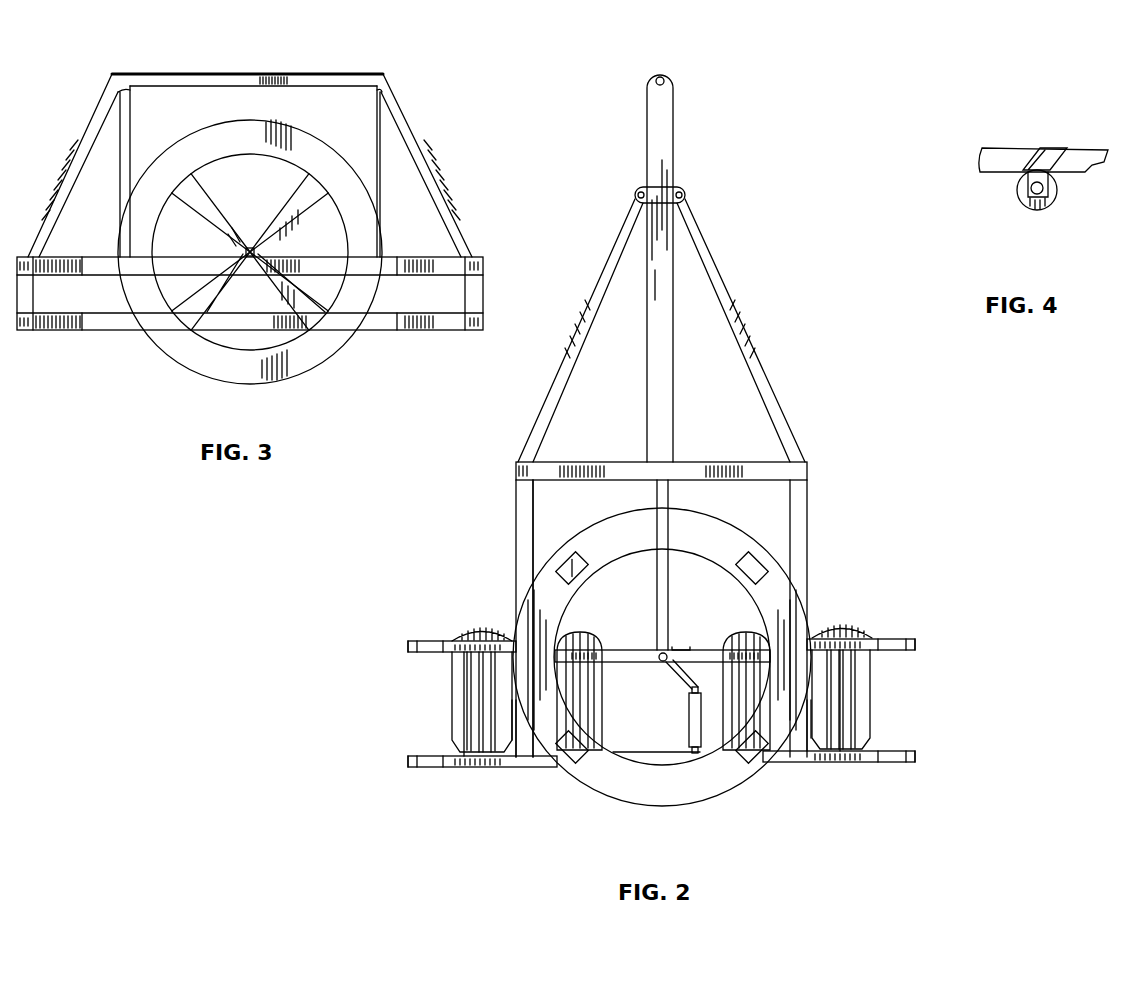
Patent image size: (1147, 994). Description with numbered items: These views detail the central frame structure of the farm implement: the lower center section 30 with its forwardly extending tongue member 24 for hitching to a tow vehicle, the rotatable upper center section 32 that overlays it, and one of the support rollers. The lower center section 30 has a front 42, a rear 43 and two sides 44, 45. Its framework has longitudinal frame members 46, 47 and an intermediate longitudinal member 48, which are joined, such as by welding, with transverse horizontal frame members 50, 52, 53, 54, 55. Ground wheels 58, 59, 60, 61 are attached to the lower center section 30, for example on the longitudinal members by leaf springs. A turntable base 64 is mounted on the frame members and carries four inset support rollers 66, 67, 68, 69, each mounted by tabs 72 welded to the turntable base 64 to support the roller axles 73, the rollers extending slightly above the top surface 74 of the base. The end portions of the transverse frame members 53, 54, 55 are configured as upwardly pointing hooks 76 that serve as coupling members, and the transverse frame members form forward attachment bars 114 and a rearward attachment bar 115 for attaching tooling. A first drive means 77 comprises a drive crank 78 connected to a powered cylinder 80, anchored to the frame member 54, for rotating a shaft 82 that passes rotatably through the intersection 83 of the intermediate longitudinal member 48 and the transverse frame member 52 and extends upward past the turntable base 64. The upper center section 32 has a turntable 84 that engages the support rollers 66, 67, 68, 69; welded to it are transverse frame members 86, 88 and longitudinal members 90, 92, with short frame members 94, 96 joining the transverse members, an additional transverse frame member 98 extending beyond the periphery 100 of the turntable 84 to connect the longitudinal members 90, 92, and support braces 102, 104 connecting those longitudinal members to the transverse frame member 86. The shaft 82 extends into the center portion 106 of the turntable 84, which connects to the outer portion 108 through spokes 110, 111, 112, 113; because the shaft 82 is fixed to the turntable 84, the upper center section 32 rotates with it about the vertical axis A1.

In FIG. 2, the tongue member 24 is at (665, 126).
In FIG. 2, the lower center section 30 is at (806, 540).
In FIG. 3, the upper center section 32 is at (385, 73).
In FIG. 2, the front 42 is at (782, 445).
In FIG. 2, the rear 43 is at (778, 764).
In FIG. 2, the side 44 is at (516, 592).
In FIG. 2, the side 45 is at (810, 566).
In FIG. 2, the longitudinal frame member 46 is at (806, 481).
In FIG. 2, the longitudinal frame member 47 is at (516, 503).
In FIG. 2, the intermediate longitudinal member 48 is at (668, 492).
In FIG. 2, the transverse horizontal frame member 50 is at (710, 467).
In FIG. 2, the transverse horizontal frame member 52 is at (622, 653).
In FIG. 2, the transverse horizontal frame member 53 is at (450, 642).
In FIG. 2, the transverse horizontal frame member 54 is at (553, 762).
In FIG. 2, the transverse horizontal frame member 55 is at (870, 640).
In FIG. 2, the ground wheel 58 is at (451, 712).
In FIG. 2, the ground wheel 59 is at (598, 699).
In FIG. 2, the ground wheel 60 is at (752, 633).
In FIG. 2, the ground wheel 61 is at (866, 723).
In FIG. 2, the turntable base 64 is at (624, 788).
In FIG. 4, the turntable base 64 is at (985, 159).
In FIG. 2, the support roller 66 is at (578, 560).
In FIG. 4, the support roller 66 is at (1028, 200).
In FIG. 2, the support roller 67 is at (752, 553).
In FIG. 2, the support roller 68 is at (749, 765).
In FIG. 2, the support roller 69 is at (576, 762).
In FIG. 4, the tab 72 is at (1028, 178).
In FIG. 4, the roller axle 73 is at (1043, 190).
In FIG. 2, the top surface 74 is at (800, 593).
In FIG. 4, the top surface 74 is at (1088, 153).
In FIG. 2, the hook 76 is at (415, 646).
In FIG. 2, the first drive means 77 is at (679, 646).
In FIG. 2, the drive crank 78 is at (678, 672).
In FIG. 2, the powered cylinder 80 is at (689, 719).
In FIG. 3, the shaft 82 is at (262, 253).
In FIG. 2, the shaft 82 is at (660, 661).
In FIG. 2, the intersection 83 is at (684, 652).
In FIG. 3, the turntable 84 is at (304, 138).
In FIG. 3, the transverse frame member 86 is at (68, 259).
In FIG. 3, the transverse frame member 88 is at (274, 318).
In FIG. 3, the longitudinal member 90 is at (123, 156).
In FIG. 3, the longitudinal member 92 is at (376, 163).
In FIG. 3, the short frame member 94 is at (27, 304).
In FIG. 3, the short frame member 96 is at (474, 278).
In FIG. 3, the transverse frame member 98 is at (196, 74).
In FIG. 3, the periphery 100 is at (177, 362).
In FIG. 3, the support brace 102 is at (86, 134).
In FIG. 3, the support brace 104 is at (409, 126).
In FIG. 3, the center portion 106 is at (249, 238).
In FIG. 3, the outer portion 108 is at (326, 348).
In FIG. 3, the spoke 110 is at (202, 198).
In FIG. 3, the spoke 111 is at (303, 198).
In FIG. 3, the spoke 112 is at (336, 297).
In FIG. 3, the spoke 113 is at (205, 287).
In FIG. 2, the forward attachment bar 114 is at (562, 468).
In FIG. 2, the rearward attachment bar 115 is at (464, 766).
In FIG. 3, the vertical axis A1 is at (258, 247).
In FIG. 2, the vertical axis A1 is at (660, 654).